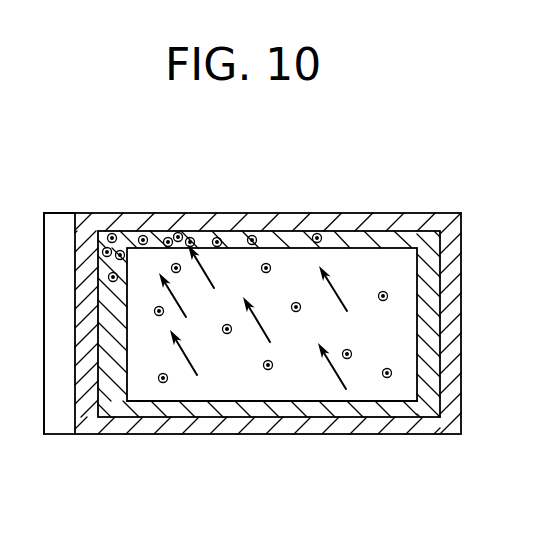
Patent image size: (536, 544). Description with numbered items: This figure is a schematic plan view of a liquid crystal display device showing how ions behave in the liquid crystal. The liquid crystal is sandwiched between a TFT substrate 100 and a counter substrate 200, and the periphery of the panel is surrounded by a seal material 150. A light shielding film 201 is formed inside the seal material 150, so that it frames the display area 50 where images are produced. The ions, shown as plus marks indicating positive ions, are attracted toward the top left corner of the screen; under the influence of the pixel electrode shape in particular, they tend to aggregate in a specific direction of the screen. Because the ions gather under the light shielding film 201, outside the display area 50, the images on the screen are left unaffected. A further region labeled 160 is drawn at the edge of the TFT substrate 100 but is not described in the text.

The counter substrate 200 is at (347, 437).
The light shielding film 201 is at (232, 410).
The seal material 150 is at (158, 436).
The TFT substrate 100 is at (56, 436).
The end portion of base member 160 is at (58, 225).
The display area 50 is at (342, 267).